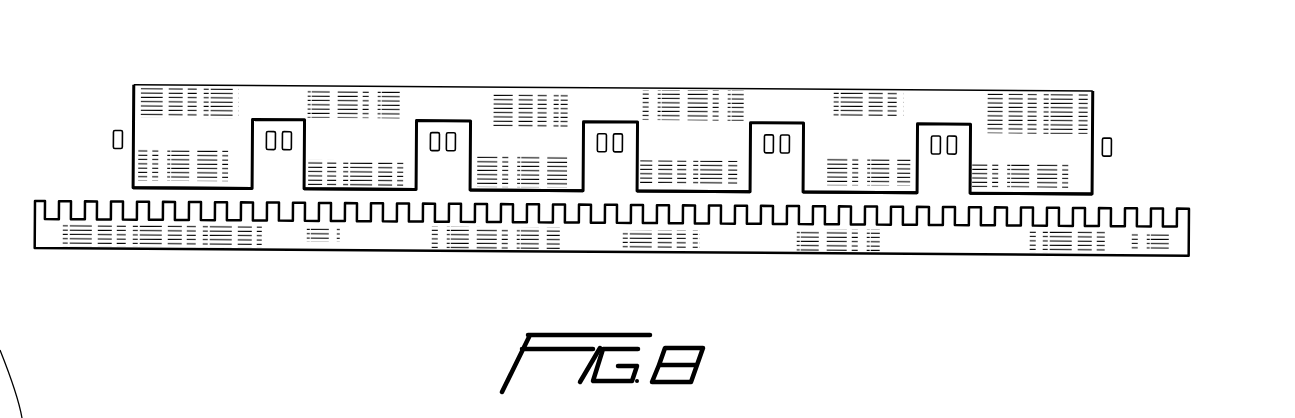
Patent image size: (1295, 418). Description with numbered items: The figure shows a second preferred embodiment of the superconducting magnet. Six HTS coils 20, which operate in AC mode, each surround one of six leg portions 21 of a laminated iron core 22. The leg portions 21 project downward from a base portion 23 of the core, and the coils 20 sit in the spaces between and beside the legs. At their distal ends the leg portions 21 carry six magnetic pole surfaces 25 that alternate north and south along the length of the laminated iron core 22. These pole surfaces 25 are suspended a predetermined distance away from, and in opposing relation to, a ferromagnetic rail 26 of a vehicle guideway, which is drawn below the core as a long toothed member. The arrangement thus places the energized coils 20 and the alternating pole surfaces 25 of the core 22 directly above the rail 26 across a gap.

The HTS coil 20 is at (111, 127).
The leg portion 21 is at (153, 142).
The laminated iron core 22 is at (1096, 124).
The base portion 23 is at (957, 110).
The magnetic pole surface 25 is at (210, 193).
The ferromagnetic rail 26 is at (1192, 241).